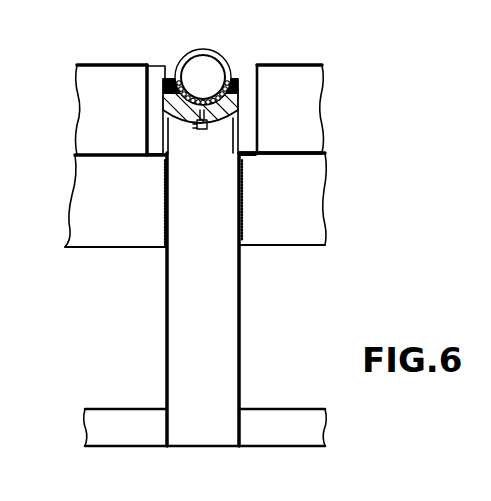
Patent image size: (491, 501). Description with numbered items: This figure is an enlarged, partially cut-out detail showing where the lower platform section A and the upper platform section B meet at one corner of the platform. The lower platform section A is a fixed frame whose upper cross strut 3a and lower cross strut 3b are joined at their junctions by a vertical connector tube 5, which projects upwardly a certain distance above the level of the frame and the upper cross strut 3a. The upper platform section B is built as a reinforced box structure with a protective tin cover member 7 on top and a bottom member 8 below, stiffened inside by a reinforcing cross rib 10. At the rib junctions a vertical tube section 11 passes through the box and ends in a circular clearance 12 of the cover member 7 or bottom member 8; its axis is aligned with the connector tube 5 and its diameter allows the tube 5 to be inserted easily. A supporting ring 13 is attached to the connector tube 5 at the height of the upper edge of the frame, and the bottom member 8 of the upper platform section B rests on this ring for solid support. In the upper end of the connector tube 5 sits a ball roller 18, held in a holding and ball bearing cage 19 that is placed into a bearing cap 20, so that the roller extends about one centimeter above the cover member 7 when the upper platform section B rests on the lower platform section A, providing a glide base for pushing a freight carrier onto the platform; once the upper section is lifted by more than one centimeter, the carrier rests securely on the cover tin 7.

The upper cross strut 3a is at (292, 435).
The lower cross strut 3b is at (127, 228).
The vertical connector tube 5 is at (240, 327).
The protective tin cover member 7 is at (290, 66).
The bottom member 8 is at (97, 158).
The reinforcing cross rib 10 is at (107, 75).
The tube section 11 is at (145, 107).
The circular clearance 12 is at (155, 70).
The supporting ring 13 is at (248, 160).
The ball roller 18 is at (205, 73).
The holding and ball bearing cage 19 is at (177, 82).
The bearing cap 20 is at (238, 105).
The lower platform section A is at (300, 222).
The upper platform section B is at (298, 127).